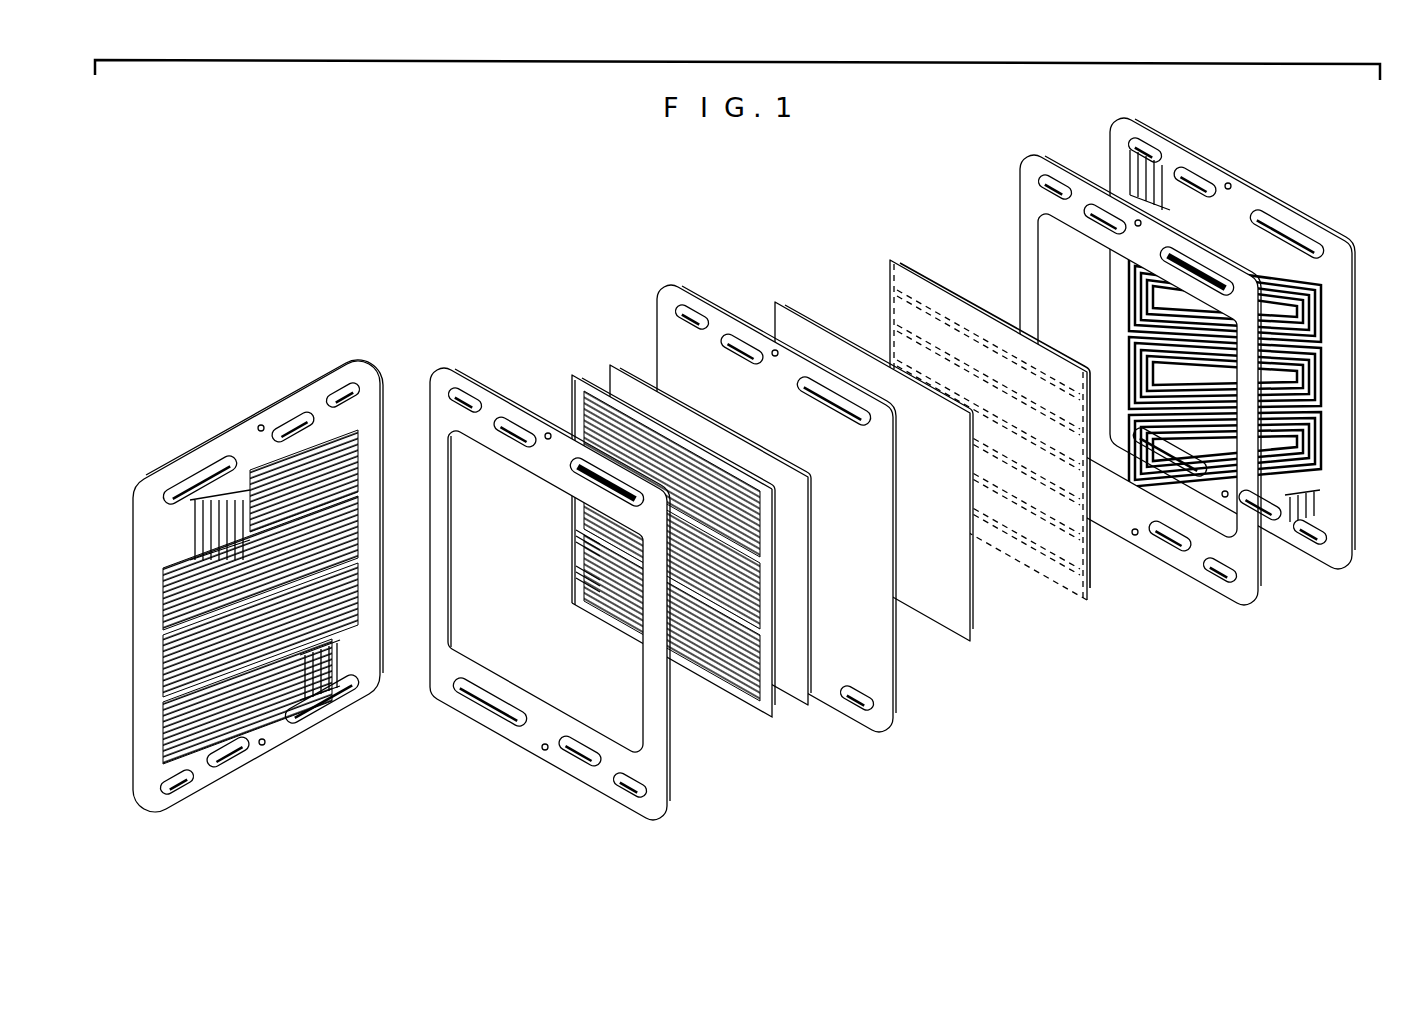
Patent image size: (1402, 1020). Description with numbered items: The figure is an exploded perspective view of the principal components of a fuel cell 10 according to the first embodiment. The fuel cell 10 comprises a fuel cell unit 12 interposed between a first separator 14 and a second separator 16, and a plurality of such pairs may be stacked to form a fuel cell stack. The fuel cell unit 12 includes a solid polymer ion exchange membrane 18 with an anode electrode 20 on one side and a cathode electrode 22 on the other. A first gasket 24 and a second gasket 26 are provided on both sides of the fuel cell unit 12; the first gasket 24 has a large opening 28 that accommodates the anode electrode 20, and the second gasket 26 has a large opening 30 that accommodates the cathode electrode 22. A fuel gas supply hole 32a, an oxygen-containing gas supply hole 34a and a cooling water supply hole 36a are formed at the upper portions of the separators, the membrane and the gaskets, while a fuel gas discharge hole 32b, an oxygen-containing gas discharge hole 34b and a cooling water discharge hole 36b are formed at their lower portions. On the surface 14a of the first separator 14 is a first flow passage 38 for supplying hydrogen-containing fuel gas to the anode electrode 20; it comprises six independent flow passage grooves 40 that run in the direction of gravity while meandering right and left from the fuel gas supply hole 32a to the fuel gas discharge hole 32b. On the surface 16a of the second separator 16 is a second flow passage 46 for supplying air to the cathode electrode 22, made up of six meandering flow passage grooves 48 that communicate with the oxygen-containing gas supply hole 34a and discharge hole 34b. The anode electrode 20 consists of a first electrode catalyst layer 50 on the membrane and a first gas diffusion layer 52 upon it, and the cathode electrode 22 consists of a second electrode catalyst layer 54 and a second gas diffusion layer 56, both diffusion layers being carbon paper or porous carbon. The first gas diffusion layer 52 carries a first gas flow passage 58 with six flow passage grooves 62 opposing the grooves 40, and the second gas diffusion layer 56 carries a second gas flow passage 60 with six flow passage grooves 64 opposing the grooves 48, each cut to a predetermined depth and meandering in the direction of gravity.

The fuel cell 10 is at (828, 135).
The fuel cell unit 12 is at (657, 283).
The first separator 14 is at (1250, 170).
The surface of the first separator 14a is at (1330, 493).
The second separator 16 is at (245, 422).
The surface of the second separator 16a is at (365, 655).
The solid polymer ion exchange membrane 18 is at (885, 665).
The anode electrode 20 is at (914, 265).
The cathode electrode 22 is at (745, 710).
The first gasket 24 is at (1035, 150).
The second gasket 26 is at (437, 368).
The opening 28 is at (1045, 235).
The opening 30 is at (448, 575).
The fuel gas supply hole 32a is at (1148, 148).
The fuel gas discharge hole 32b is at (1307, 540).
The oxygen-containing gas supply hole 34a is at (1200, 265).
The oxygen-containing gas discharge hole 34b is at (1150, 450).
The cooling water supply hole 36a is at (1197, 182).
The cooling water discharge hole 36b is at (1268, 517).
The first flow passage 38 is at (1128, 320).
The flow passage grooves 40 is at (1130, 295).
The second flow passage 46 is at (355, 470).
The flow passage grooves 48 is at (355, 555).
The first electrode catalyst layer 50 is at (952, 635).
The first gas diffusion layer 52 is at (1082, 600).
The second electrode catalyst layer 54 is at (805, 583).
The second gas diffusion layer 56 is at (747, 490).
The first gas flow passage 58 is at (1040, 560).
The second gas flow passage 60 is at (588, 540).
The flow passage grooves 62 is at (1032, 545).
The flow passage grooves 64 is at (590, 578).